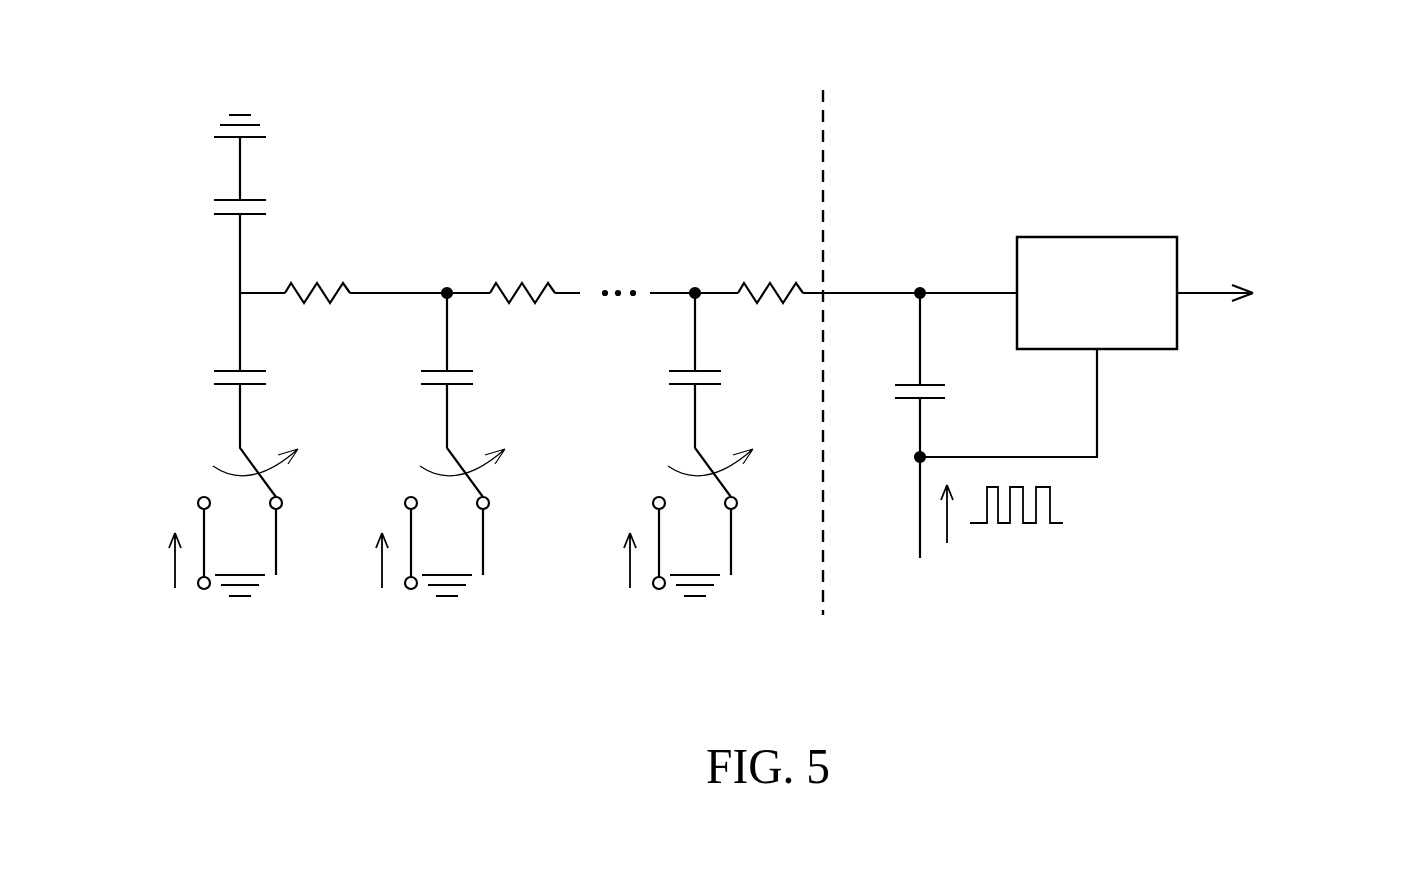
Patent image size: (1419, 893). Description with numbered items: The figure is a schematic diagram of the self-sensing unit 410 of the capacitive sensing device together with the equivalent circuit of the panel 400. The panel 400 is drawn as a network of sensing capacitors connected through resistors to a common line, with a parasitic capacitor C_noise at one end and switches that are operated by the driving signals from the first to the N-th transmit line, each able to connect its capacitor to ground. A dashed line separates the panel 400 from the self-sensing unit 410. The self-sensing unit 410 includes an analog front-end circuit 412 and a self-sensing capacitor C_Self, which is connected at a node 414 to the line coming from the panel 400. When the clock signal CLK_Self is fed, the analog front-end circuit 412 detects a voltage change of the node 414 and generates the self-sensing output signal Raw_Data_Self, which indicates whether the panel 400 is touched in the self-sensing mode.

The panel 400 is at (660, 127).
The self-sensing unit 410 is at (987, 127).
The analog front-end circuit 412 is at (1158, 236).
The node 414 is at (922, 289).